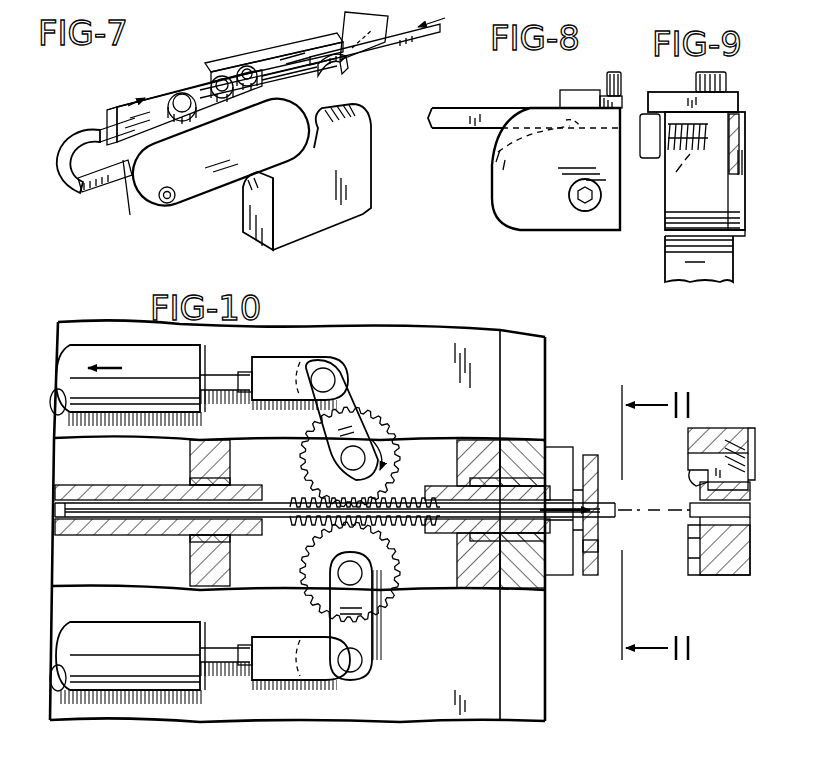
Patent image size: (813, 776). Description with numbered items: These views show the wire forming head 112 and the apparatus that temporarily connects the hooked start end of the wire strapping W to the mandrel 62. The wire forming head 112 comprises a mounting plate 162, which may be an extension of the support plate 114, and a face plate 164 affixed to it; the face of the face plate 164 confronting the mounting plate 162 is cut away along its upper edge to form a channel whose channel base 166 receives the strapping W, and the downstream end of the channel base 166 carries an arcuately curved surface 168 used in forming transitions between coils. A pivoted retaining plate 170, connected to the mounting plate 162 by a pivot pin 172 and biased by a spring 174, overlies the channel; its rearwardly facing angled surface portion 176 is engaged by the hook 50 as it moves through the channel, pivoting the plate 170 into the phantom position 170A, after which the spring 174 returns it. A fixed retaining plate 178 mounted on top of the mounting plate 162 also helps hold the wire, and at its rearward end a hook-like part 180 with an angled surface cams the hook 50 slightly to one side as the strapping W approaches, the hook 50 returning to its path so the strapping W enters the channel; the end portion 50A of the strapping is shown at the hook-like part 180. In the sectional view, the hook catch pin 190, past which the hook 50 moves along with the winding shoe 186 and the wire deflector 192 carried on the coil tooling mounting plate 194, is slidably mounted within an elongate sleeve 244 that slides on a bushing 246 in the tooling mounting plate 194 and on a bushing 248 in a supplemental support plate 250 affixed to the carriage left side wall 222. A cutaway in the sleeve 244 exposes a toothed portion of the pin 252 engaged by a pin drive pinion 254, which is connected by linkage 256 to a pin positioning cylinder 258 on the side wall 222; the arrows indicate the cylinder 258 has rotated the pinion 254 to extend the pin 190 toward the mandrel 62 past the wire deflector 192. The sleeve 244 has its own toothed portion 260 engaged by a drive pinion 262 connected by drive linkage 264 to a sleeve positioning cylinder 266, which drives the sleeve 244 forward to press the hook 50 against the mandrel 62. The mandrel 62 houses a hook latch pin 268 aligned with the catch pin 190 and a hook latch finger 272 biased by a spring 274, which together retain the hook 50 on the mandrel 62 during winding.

In FIG. 7, the hook 50 is at (75, 140).
In FIG. 7, the web end portion 50A is at (362, 26).
In FIG. 7, the wire strapping W is at (418, 50).
In FIG. 8, the wire strapping W is at (463, 110).
In FIG. 9, the wire strapping W is at (742, 120).
In FIG. 10, the wire strapping W is at (604, 530).
In FIG. 10, the mandrel 62 is at (732, 424).
In FIG. 7, the wire forming head 112 is at (207, 198).
In FIG. 8, the wire forming head 112 is at (550, 103).
In FIG. 9, the wire forming head 112 is at (660, 270).
In FIG. 7, the support plate 114 is at (368, 158).
In FIG. 9, the support plate 114 is at (680, 257).
In FIG. 7, the mounting plate 162 is at (105, 198).
In FIG. 9, the mounting plate 162 is at (675, 203).
In FIG. 7, the face plate 164 is at (147, 208).
In FIG. 8, the face plate 164 is at (503, 200).
In FIG. 9, the face plate 164 is at (742, 228).
In FIG. 8, the channel base 166 is at (559, 141).
In FIG. 8, the arcuately curved surface 168 is at (497, 160).
In FIG. 9, the arcuately curved surface 168 is at (736, 156).
In FIG. 7, the pivoted retaining plate 170 is at (160, 84).
In FIG. 8, the pivoted retaining plate 170 is at (584, 90).
In FIG. 9, the pivoted retaining plate 170 is at (672, 100).
In FIG. 7, the phantom line position of retaining plate 170A is at (150, 82).
In FIG. 7, the pivot pin 172 is at (186, 92).
In FIG. 8, the pivot pin 172 is at (616, 72).
In FIG. 9, the pivot pin 172 is at (726, 76).
In FIG. 9, the spring 174 is at (678, 182).
In FIG. 7, the angled surface portion 176 is at (196, 138).
In FIG. 7, the fixed retaining plate 178 is at (282, 57).
In FIG. 7, the hook-like part 180 is at (320, 62).
In FIG. 10, the winding shoe 186 is at (562, 450).
In FIG. 10, the hook catch pin 190 is at (606, 510).
In FIG. 10, the wire deflector 192 is at (592, 455).
In FIG. 10, the coil tooling mounting plate 194 is at (546, 340).
In FIG. 10, the carriage left side wall 222 is at (404, 340).
In FIG. 10, the elongate sleeve 244 is at (570, 560).
In FIG. 10, the bushing 246 is at (487, 440).
In FIG. 10, the bushing 248 is at (190, 550).
In FIG. 10, the supplemental support plate 250 is at (195, 456).
In FIG. 10, the toothed portion of the pin 252 is at (280, 495).
In FIG. 10, the pin drive pinion 254 is at (398, 452).
In FIG. 10, the linkage 256 is at (318, 358).
In FIG. 10, the pin positioning cylinder 258 is at (132, 348).
In FIG. 10, the toothed portion 260 is at (290, 528).
In FIG. 10, the drive pinion 262 is at (325, 572).
In FIG. 10, the drive linkage 264 is at (376, 656).
In FIG. 10, the sleeve positioning cylinder 266 is at (138, 635).
In FIG. 10, the hook latch pin 268 is at (712, 512).
In FIG. 10, the hook latch finger 272 is at (696, 470).
In FIG. 10, the spring 274 is at (752, 440).